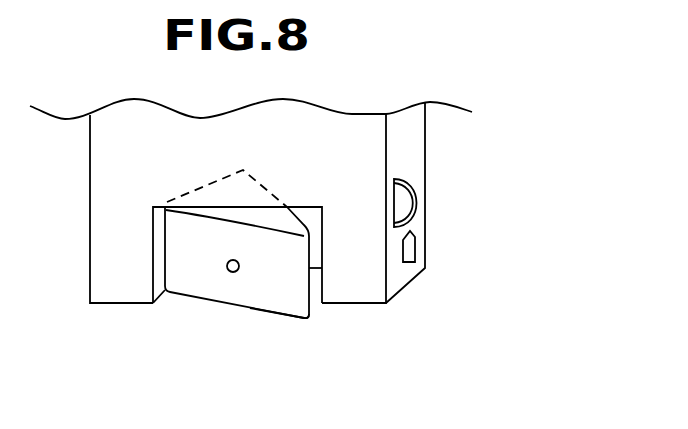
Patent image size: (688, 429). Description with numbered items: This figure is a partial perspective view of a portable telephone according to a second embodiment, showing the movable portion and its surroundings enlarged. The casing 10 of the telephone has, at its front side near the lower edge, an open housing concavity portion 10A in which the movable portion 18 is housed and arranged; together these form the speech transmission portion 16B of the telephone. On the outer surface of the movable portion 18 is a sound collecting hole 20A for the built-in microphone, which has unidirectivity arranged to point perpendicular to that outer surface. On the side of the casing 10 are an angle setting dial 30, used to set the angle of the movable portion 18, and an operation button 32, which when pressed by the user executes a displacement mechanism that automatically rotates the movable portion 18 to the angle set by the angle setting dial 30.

The casing 10 is at (407, 159).
The housing concavity portion 10A is at (163, 258).
The movable portion 18 is at (256, 288).
The sound collecting hole 20A is at (233, 272).
The angle setting dial 30 is at (405, 206).
The operation button 32 is at (415, 243).
The speech transmission portion 16B is at (295, 321).